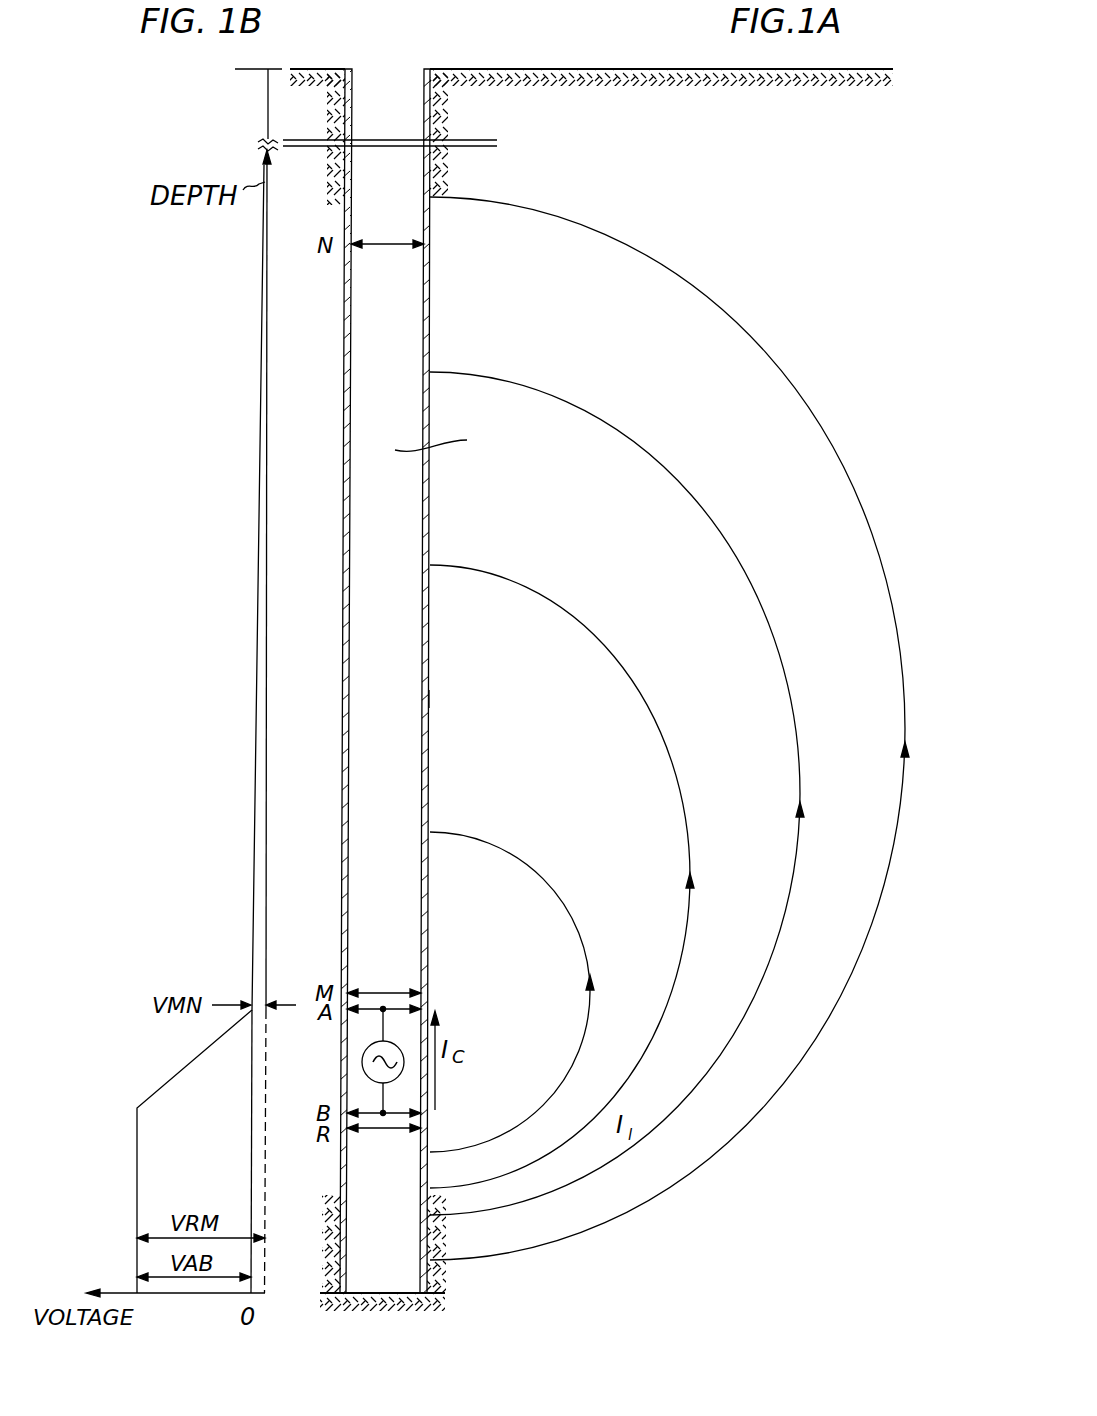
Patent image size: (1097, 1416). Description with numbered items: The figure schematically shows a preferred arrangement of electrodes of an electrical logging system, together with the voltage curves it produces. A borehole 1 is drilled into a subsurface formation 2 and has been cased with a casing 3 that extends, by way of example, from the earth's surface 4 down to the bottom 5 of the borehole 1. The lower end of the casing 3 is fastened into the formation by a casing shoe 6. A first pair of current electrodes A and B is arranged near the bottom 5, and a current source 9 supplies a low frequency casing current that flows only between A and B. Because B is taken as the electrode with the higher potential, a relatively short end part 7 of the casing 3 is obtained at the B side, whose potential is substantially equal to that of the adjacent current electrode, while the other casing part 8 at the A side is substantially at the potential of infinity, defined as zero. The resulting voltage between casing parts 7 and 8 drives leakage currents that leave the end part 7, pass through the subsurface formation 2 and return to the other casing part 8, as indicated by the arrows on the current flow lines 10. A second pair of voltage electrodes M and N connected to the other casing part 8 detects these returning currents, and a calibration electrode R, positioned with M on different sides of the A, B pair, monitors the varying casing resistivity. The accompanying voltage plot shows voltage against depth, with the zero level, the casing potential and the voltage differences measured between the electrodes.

The borehole 1 is at (439, 448).
The subsurface formation 2 is at (550, 104).
The casing 3 is at (434, 290).
The earth's surface 4 is at (590, 68).
The bottom 5 is at (383, 1300).
The casing shoe 6 is at (440, 1289).
The end part 7 is at (340, 1190).
The other casing part 8 is at (430, 700).
The current source 9 is at (361, 1066).
The current flow lines 10 is at (687, 939).